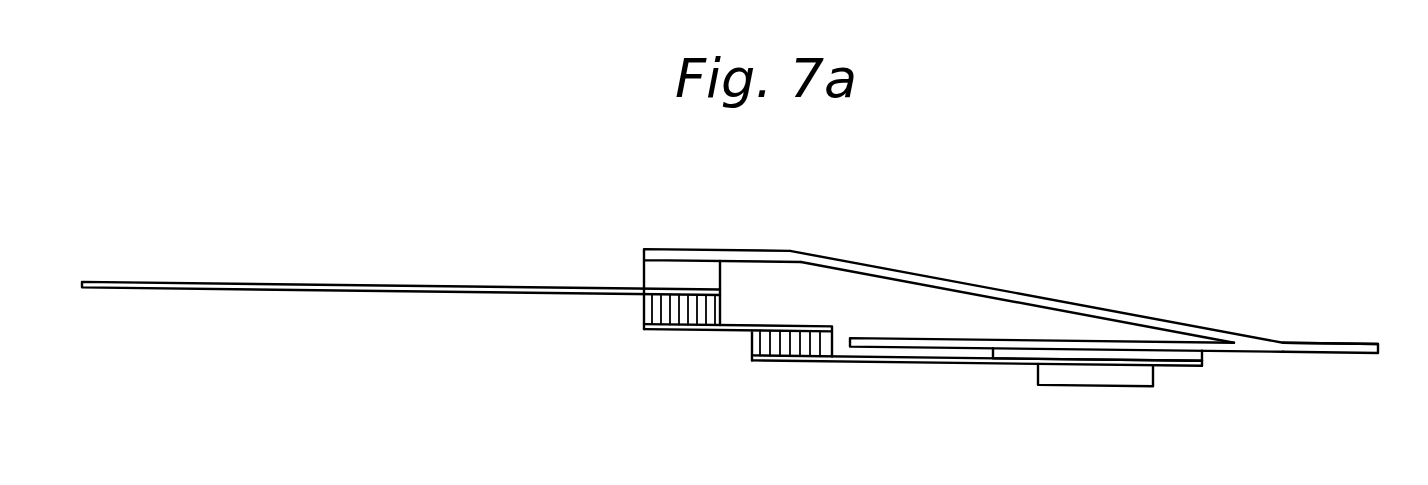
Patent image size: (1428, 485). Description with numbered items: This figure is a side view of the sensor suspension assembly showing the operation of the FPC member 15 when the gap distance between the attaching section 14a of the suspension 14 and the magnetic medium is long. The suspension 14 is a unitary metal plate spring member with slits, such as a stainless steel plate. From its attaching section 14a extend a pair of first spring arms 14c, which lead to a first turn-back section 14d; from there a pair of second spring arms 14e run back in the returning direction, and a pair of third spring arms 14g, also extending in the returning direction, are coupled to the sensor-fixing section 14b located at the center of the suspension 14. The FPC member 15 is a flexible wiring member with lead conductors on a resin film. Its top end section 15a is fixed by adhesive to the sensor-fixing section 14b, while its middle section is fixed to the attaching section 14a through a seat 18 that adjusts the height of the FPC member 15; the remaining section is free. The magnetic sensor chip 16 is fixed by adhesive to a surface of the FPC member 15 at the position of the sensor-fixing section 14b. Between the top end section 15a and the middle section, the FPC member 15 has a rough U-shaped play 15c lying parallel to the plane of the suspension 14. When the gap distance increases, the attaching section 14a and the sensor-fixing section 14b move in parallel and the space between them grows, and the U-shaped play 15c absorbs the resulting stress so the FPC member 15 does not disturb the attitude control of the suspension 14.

The suspension 14 is at (1265, 316).
The attaching section 14a is at (683, 254).
The sensor-fixing section 14b is at (1140, 351).
The first spring arms 14c is at (895, 270).
The first turn-back section 14d is at (1353, 342).
The second spring arms 14e is at (963, 339).
The third spring arms 14g is at (1040, 353).
The FPC member 15 is at (312, 284).
The top end section 15a is at (1163, 366).
The play 15c is at (705, 392).
The magnetic sensor chip 16 is at (1095, 385).
The seat 18 is at (655, 277).